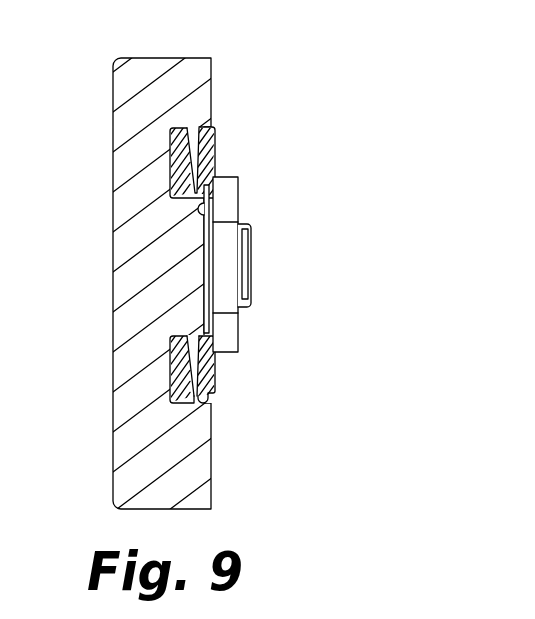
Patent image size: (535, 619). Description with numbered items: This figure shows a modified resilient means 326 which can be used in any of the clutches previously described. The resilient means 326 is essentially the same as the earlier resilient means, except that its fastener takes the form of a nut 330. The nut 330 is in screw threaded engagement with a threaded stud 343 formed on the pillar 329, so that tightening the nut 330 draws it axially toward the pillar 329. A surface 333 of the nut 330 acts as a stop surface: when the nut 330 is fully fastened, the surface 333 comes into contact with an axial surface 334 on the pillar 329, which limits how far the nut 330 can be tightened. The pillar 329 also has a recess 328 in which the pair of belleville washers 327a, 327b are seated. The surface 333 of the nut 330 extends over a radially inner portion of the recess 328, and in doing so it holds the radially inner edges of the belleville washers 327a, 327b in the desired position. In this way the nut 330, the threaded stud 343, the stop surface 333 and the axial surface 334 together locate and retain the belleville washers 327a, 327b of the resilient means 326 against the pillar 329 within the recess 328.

The resilient means 326 is at (306, 235).
The belleville washer 327a is at (193, 124).
The belleville washer 327b is at (214, 144).
The recess 328 is at (205, 396).
The pillar 329 is at (180, 247).
The nut 330 is at (227, 340).
The surface 333 is at (206, 208).
The axial surface 334 is at (204, 317).
The threaded stud 343 is at (243, 262).